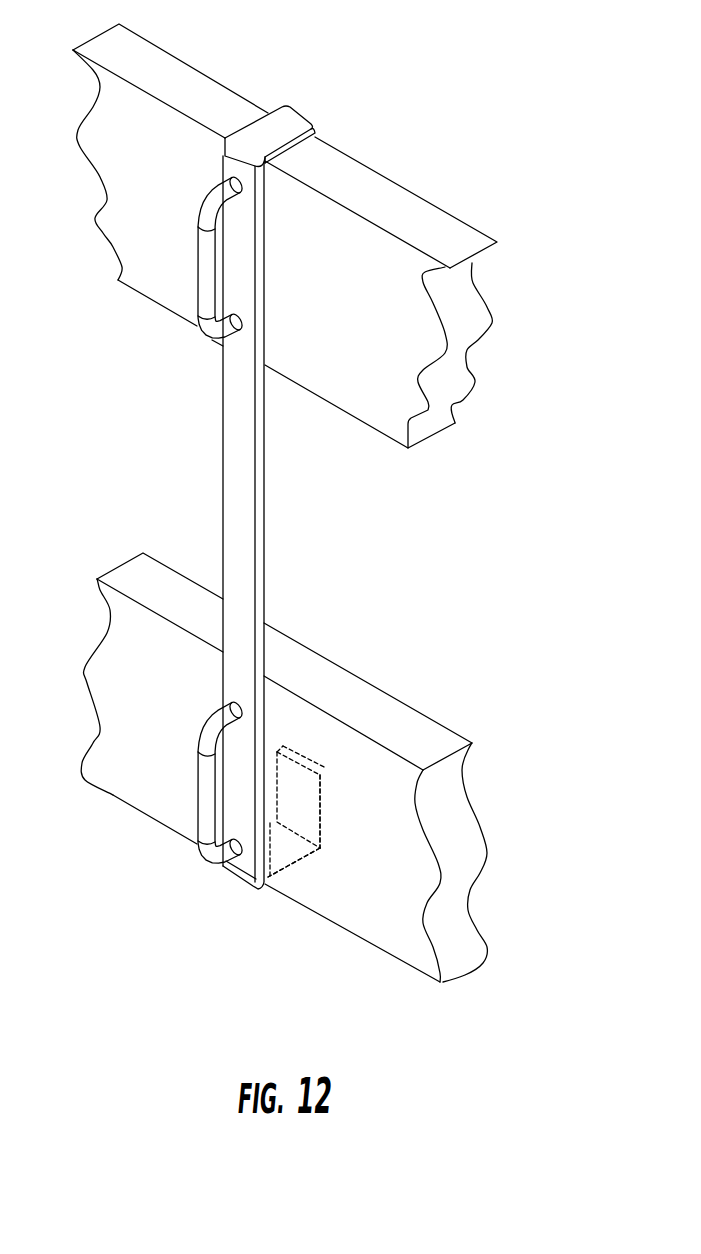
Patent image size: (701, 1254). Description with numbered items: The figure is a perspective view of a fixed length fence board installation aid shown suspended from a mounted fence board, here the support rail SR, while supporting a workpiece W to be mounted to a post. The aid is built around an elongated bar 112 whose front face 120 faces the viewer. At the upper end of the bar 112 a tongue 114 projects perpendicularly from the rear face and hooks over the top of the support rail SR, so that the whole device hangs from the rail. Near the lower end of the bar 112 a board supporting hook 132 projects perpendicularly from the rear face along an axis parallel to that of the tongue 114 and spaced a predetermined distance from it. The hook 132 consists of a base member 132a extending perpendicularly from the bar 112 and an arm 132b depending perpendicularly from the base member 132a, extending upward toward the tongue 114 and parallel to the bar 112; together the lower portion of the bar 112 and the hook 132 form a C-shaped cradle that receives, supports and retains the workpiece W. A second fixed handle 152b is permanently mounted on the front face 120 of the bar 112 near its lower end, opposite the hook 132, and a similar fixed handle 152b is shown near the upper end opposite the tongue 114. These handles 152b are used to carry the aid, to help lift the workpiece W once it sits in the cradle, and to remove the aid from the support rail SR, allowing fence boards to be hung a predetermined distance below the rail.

The bar 112 is at (264, 472).
The tongue 114 is at (273, 125).
The front face 120 is at (233, 474).
The second fixed handle 152b is at (205, 275).
The board supporting hook 132 is at (352, 848).
The base member 132a is at (300, 870).
The arm 132b is at (310, 799).
The support rail SR is at (367, 331).
The workpiece W is at (167, 726).